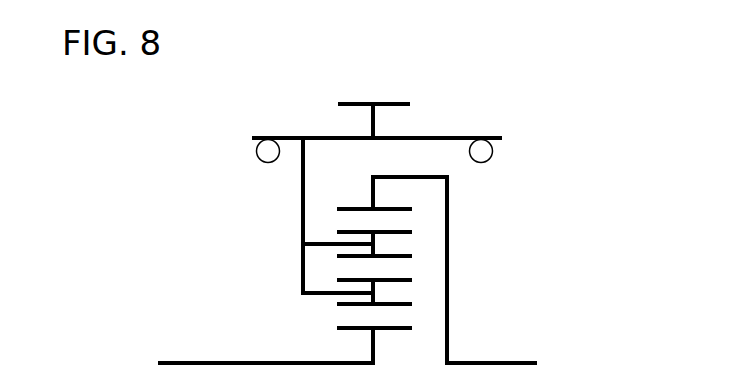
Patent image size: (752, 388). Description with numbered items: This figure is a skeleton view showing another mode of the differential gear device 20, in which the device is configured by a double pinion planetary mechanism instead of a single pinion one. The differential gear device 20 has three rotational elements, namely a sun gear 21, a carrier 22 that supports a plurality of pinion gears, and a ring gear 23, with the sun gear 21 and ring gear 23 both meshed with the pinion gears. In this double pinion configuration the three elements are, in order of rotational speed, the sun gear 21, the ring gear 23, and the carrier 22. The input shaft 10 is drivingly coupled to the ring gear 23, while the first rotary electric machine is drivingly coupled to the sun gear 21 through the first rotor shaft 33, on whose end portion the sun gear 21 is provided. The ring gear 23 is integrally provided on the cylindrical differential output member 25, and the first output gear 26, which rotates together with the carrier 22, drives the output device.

The input shaft 10 is at (528, 362).
The differential gear device 20 is at (270, 235).
The sun gear 21 is at (338, 327).
The carrier 22 is at (303, 203).
The ring gear 23 is at (398, 209).
The differential output member 25 is at (431, 137).
The first output gear 26 is at (392, 103).
The first rotor shaft 33 is at (205, 363).